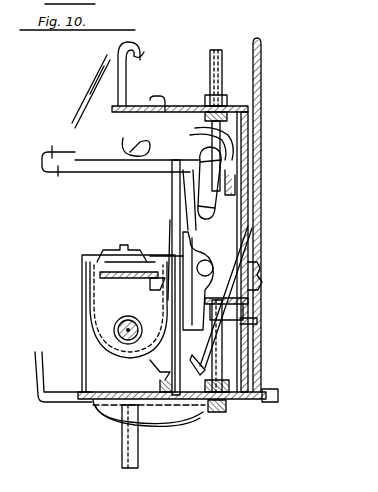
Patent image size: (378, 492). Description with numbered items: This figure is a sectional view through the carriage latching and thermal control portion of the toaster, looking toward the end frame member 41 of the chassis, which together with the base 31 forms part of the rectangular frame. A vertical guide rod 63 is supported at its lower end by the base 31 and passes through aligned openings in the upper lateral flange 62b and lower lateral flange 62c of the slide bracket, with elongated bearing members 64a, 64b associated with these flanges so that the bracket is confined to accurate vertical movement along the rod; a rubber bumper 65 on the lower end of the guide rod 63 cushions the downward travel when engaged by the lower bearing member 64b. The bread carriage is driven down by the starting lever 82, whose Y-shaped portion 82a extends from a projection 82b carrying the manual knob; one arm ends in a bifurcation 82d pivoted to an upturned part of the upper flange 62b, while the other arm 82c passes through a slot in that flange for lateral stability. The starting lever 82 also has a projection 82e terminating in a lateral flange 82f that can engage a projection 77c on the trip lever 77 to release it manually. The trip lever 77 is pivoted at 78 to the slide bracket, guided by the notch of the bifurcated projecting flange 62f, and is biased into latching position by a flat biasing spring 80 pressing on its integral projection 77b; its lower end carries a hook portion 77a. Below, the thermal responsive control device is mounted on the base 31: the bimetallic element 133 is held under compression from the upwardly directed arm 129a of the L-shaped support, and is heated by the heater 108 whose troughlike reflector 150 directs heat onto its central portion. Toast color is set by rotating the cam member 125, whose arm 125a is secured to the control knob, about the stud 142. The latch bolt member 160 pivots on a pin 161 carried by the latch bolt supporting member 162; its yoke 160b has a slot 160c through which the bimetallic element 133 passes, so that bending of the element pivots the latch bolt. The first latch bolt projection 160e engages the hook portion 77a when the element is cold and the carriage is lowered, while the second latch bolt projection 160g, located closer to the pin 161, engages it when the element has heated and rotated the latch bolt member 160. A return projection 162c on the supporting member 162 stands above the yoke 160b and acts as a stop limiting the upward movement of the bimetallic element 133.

The end frame member 41 is at (258, 74).
The upper lateral flange 62b is at (170, 104).
The lower lateral flange 62c is at (256, 318).
The bifurcated projecting flange 62f is at (256, 270).
The starting lever 82 is at (76, 119).
The Y-shaped portion 82a is at (100, 98).
The projection 82b is at (76, 120).
The arm 82c is at (152, 104).
The bifurcation 82d is at (133, 47).
The projection 82e is at (126, 139).
The lateral flange 82f is at (200, 124).
The guide rod 63 is at (208, 62).
The elongated bearing member 64a is at (222, 88).
The elongated bearing member 64b is at (236, 340).
The rubber bumper 65 is at (226, 380).
The trip lever 77 is at (192, 199).
The hook portion 77a is at (200, 364).
The integral projection 77b is at (220, 208).
The projection 77c is at (198, 152).
The pivot 78 is at (250, 270).
The biasing spring 80 is at (230, 196).
The heater 108 is at (113, 330).
The cam member 125 is at (132, 436).
The arm 125a is at (36, 400).
The upwardly directed arm 129a is at (98, 248).
The bimetallic element 133 is at (100, 273).
The stud 142 is at (128, 457).
The reflector 150 is at (98, 345).
The latch bolt member 160 is at (186, 253).
The yoke 160b is at (165, 253).
The slot 160c is at (140, 290).
The first latch bolt projection 160e is at (160, 378).
The second latch bolt projection 160g is at (150, 362).
The pin 161 is at (160, 288).
The latch bolt supporting member 162 is at (170, 188).
The return projection 162c is at (168, 224).
The base 31 is at (248, 401).